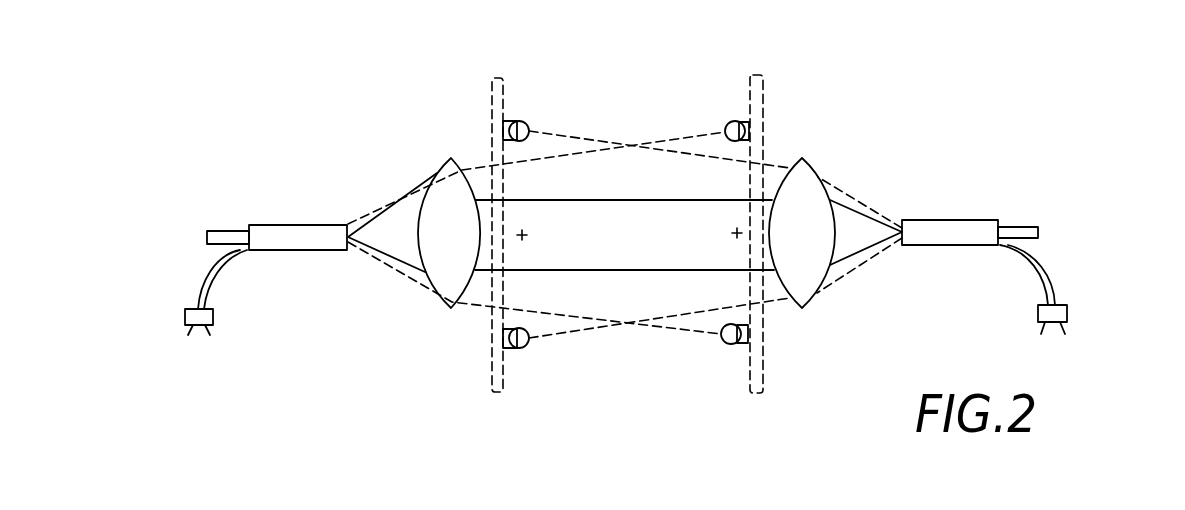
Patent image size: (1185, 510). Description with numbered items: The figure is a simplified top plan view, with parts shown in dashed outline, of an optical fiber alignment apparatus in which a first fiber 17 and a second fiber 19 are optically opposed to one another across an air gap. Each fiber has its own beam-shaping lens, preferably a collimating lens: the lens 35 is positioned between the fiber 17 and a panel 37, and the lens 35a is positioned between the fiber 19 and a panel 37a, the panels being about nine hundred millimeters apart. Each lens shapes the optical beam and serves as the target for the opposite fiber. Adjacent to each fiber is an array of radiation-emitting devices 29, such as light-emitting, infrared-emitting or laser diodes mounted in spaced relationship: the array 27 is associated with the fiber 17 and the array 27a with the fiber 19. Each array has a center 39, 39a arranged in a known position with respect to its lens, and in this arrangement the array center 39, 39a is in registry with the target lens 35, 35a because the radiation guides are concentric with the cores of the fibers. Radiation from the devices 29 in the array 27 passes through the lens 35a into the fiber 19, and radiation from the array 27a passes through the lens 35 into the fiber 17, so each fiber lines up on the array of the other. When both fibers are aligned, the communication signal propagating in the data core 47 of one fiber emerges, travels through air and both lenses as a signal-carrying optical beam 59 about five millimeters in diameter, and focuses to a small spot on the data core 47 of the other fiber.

The first optical fiber 17 is at (940, 225).
The second optical fiber 19 is at (272, 230).
The array of radiation-emitting devices 27 is at (725, 355).
The array of radiation-emitting devices 27a is at (520, 357).
The radiation-emitting device 29 is at (522, 120).
The beam-shaping lens 35 is at (807, 170).
The beam-shaping lens 35a is at (442, 300).
The panel 37 is at (767, 368).
The panel 37a is at (492, 377).
The array center 39 is at (733, 232).
The array center 39a is at (528, 237).
The data core 47 is at (205, 237).
The signal-carrying optical beam 59 is at (630, 250).